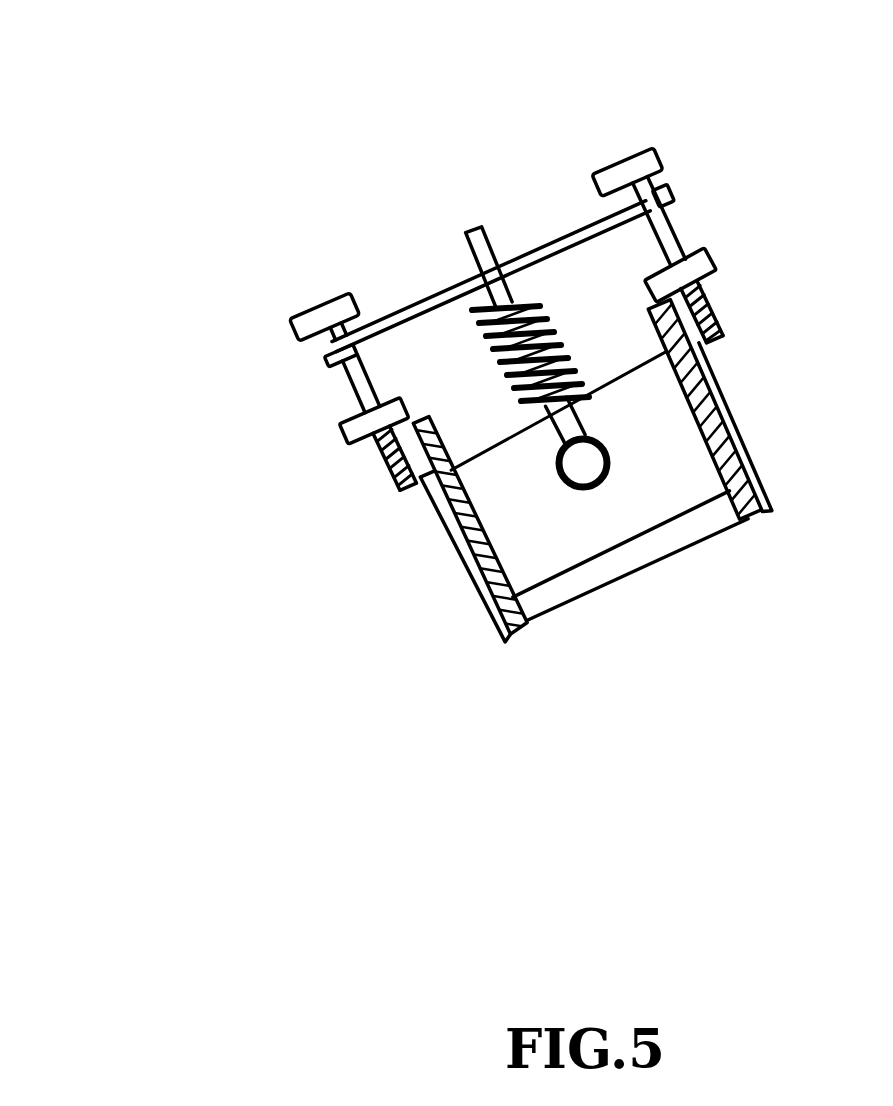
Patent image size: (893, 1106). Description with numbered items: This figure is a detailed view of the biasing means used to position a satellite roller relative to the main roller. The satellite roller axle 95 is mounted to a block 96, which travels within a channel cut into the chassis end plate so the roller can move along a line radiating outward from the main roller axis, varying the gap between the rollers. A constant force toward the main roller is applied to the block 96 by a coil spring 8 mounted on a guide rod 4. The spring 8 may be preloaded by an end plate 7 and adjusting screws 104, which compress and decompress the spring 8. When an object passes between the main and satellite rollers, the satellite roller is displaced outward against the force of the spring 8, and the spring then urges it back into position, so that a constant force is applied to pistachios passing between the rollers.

The guide rod 4 is at (457, 226).
The end plate 7 is at (468, 266).
The coil spring 8 is at (530, 257).
The satellite roller axle 95 is at (592, 512).
The block 96 is at (668, 506).
The adjusting screw 104 is at (224, 464).